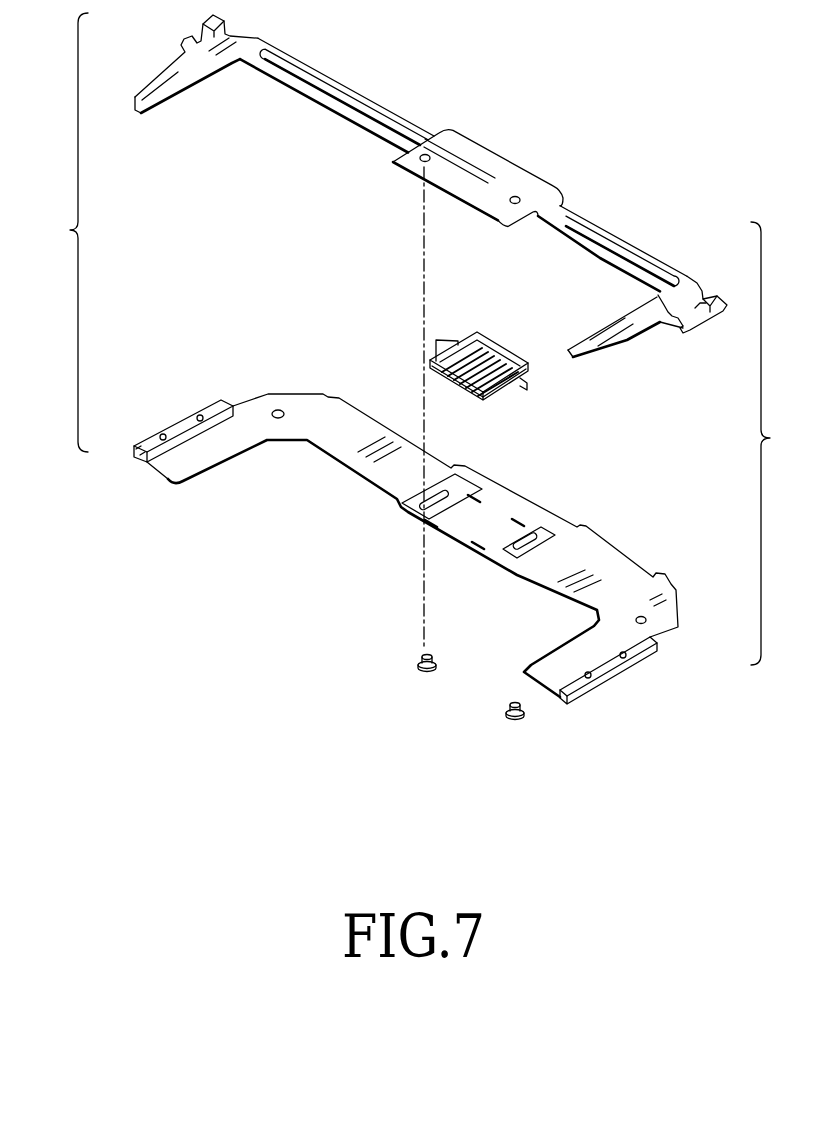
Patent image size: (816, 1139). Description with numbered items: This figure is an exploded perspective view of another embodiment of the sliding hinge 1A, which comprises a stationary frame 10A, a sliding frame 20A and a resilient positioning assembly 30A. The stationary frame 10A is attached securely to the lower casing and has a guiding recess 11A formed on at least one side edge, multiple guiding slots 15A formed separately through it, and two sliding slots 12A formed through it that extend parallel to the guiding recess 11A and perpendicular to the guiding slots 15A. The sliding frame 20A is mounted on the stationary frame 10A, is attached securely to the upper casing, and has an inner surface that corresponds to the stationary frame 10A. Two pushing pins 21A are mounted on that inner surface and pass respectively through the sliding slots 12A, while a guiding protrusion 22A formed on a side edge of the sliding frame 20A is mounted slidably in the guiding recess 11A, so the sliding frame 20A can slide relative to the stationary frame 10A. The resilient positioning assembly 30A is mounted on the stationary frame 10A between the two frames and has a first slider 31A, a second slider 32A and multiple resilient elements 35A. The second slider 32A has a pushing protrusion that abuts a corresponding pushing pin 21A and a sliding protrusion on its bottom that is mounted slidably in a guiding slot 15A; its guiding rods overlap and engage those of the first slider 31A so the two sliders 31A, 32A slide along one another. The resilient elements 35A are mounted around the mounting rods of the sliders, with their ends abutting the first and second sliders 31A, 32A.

The sliding hinge 1A is at (398, 339).
The stationary frame 10A is at (372, 553).
The guiding recess 11A is at (136, 457).
The sliding slots 12A is at (533, 537).
The guiding slots 15A is at (523, 519).
The sliding frame 20A is at (490, 163).
The pushing pin 21A is at (427, 672).
The guiding protrusion 22A is at (163, 98).
The resilient positioning assembly 30A is at (473, 342).
The first slider 31A is at (468, 338).
The second slider 32A is at (490, 388).
The resilient elements 35A is at (500, 357).